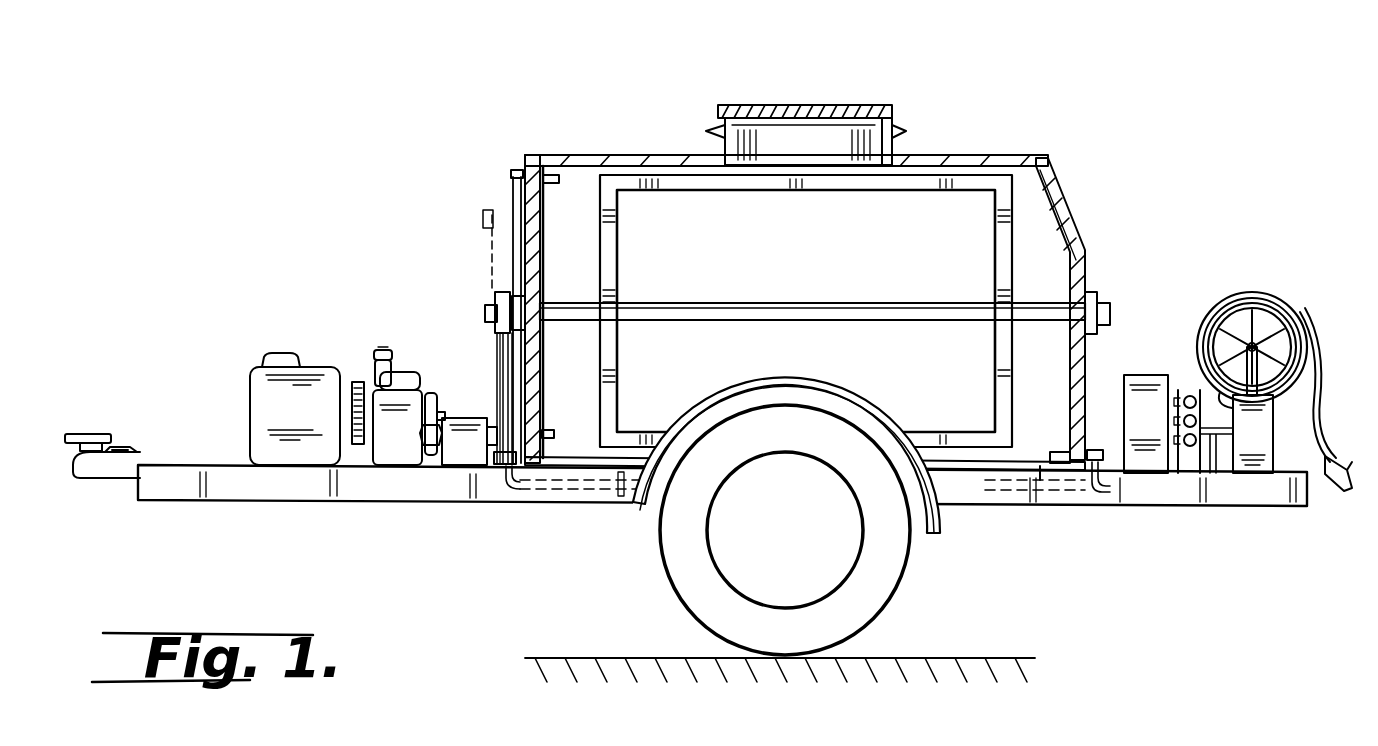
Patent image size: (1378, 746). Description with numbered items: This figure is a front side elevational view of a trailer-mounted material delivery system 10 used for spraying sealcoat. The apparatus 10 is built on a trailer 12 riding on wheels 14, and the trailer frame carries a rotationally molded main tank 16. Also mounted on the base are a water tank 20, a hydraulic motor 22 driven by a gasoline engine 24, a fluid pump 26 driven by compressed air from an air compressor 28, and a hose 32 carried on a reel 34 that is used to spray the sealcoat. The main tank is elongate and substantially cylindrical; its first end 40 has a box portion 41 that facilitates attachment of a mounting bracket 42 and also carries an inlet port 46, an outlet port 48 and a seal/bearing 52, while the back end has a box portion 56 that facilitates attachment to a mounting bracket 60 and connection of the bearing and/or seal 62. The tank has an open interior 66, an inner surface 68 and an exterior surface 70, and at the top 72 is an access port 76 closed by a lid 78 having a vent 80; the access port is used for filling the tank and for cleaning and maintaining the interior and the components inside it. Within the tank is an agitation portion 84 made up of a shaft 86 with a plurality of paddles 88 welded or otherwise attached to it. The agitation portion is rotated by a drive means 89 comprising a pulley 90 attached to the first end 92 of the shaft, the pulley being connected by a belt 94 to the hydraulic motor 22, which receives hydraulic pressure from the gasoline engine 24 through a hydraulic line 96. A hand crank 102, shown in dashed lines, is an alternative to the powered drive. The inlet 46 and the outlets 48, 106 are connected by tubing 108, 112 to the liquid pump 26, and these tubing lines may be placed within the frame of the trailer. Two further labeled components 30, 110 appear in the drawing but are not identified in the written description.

The material delivery system 10 is at (1100, 105).
The trailer 12 is at (1308, 490).
The wheels 14 is at (905, 584).
The main tank 16 is at (1077, 228).
The water tank 20 is at (283, 397).
The hydraulic motor 22 is at (465, 445).
The gasoline engine 24 is at (395, 445).
The fluid pump 26 is at (1265, 422).
The air compressor 28 is at (1150, 375).
The frame rear portion 30 is at (1270, 506).
The hose 32 is at (1290, 305).
The reel 34 is at (1250, 340).
The first end 40 is at (540, 162).
The box portion 41 is at (545, 213).
The mounting bracket 42 is at (520, 177).
The inlet port 46 is at (513, 178).
The outlet port 48 is at (552, 435).
The seal/bearing 52 is at (540, 328).
The box portion 56 is at (1110, 435).
The mounting bracket 60 is at (1085, 370).
The bearing and/or seal 62 is at (1093, 300).
The open interior 66 is at (1036, 200).
The inner surface 68 is at (1053, 197).
The exterior surface 70 is at (947, 303).
The top 72 is at (680, 155).
The access port 76 is at (815, 145).
The lid 78 is at (860, 110).
The vent 80 is at (800, 107).
The agitation portion 84 is at (605, 155).
The shaft 86 is at (958, 190).
The paddles 88 is at (918, 185).
The drive means 89 is at (487, 365).
The pulley 90 is at (495, 300).
The first end of the shaft 92 is at (487, 313).
The belt 94 is at (497, 342).
The hydraulic line 96 is at (440, 418).
The hand crank 102 is at (483, 227).
The outlet 106 is at (1043, 468).
The tubing 108 is at (511, 188).
The lower gauge fitting 110 is at (512, 465).
The tubing 112 is at (1108, 492).